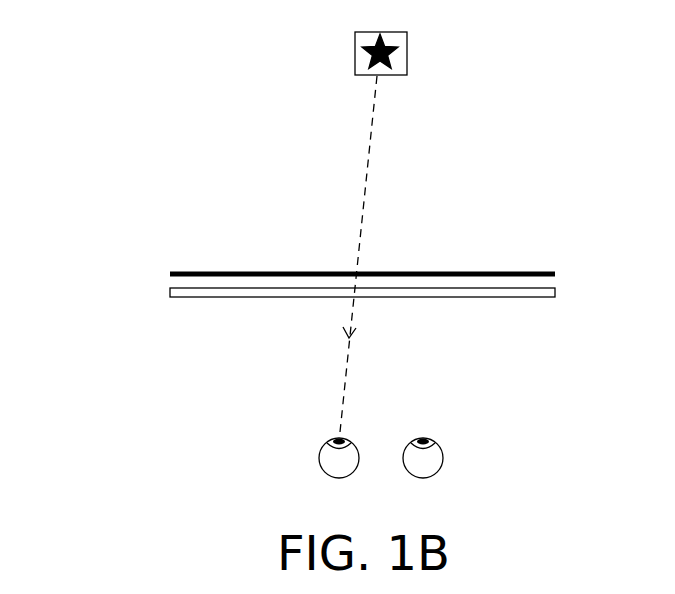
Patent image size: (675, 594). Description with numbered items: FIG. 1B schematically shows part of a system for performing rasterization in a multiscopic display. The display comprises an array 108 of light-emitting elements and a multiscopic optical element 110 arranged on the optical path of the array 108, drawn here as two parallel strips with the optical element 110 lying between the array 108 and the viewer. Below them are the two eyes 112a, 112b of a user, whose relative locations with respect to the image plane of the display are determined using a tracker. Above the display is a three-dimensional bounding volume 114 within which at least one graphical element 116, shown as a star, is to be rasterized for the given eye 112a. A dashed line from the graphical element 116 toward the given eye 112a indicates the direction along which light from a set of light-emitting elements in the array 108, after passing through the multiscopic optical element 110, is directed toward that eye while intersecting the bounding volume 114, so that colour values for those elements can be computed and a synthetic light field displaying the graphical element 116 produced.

The array of light-emitting elements 108 is at (170, 273).
The multiscopic optical element 110 is at (172, 292).
The given eye 112a is at (323, 460).
The eye 112b is at (445, 462).
The three-dimensional bounding volume 114 is at (355, 39).
The graphical element 116 is at (366, 63).